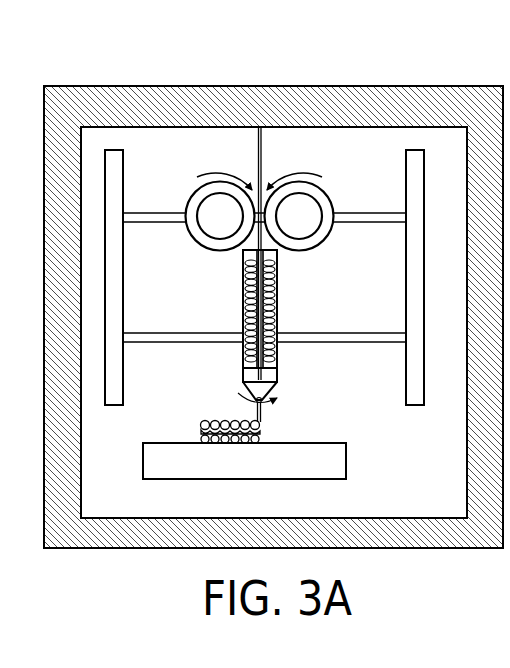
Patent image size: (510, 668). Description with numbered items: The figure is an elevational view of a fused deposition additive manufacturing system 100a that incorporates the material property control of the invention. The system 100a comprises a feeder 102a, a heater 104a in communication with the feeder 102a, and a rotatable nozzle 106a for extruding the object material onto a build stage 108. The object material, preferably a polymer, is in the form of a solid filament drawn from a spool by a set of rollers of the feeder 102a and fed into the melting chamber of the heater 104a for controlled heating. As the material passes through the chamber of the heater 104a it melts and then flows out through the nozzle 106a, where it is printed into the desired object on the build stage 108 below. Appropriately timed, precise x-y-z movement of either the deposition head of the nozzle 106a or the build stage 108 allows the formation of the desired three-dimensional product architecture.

The fused deposition additive manufacturing system 100a is at (163, 70).
The feeder 102a is at (268, 162).
The heater 104a is at (270, 303).
The rotatable nozzle 106a is at (276, 385).
The build stage 108 is at (346, 460).